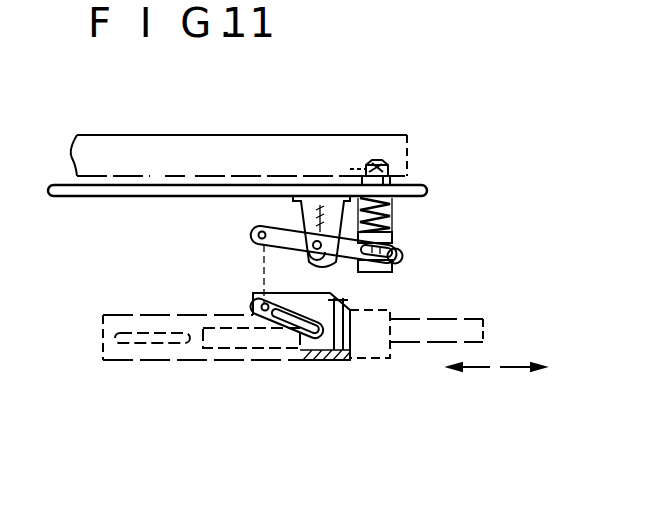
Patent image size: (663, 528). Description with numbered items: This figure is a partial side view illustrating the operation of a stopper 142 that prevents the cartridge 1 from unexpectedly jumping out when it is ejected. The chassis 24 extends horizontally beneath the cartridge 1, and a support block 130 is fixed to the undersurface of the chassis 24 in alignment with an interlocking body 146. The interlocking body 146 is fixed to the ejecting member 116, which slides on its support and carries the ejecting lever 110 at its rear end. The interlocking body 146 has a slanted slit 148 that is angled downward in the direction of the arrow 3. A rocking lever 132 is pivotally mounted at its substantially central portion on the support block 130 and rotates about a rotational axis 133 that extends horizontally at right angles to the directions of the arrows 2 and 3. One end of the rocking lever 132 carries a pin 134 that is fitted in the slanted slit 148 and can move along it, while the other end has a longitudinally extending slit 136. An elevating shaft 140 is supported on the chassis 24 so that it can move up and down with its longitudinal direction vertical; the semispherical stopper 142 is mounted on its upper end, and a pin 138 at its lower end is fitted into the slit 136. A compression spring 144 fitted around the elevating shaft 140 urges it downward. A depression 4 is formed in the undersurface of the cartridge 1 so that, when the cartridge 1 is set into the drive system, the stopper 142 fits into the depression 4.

The cartridge 1 is at (193, 150).
The arrow 2 is at (478, 370).
The arrow 3 is at (513, 370).
The depression 4 is at (358, 169).
The chassis 24 is at (429, 190).
The ejecting lever 110 is at (470, 329).
The ejecting member 116 is at (378, 350).
The support block 130 is at (300, 214).
The rocking lever 132 is at (333, 260).
The rotational axis 133 is at (288, 274).
The pin 134 is at (258, 235).
The slit 136 is at (396, 264).
The pin 138 is at (401, 252).
The elevating shaft 140 is at (393, 207).
The stopper 142 is at (386, 161).
The compression spring 144 is at (393, 233).
The interlocking body 146 is at (322, 360).
The slanted slit 148 is at (270, 338).